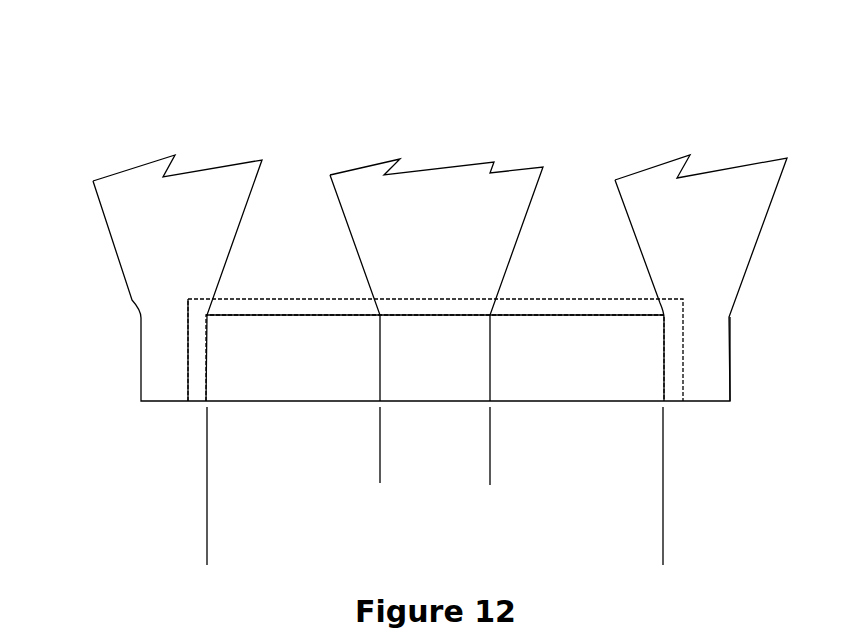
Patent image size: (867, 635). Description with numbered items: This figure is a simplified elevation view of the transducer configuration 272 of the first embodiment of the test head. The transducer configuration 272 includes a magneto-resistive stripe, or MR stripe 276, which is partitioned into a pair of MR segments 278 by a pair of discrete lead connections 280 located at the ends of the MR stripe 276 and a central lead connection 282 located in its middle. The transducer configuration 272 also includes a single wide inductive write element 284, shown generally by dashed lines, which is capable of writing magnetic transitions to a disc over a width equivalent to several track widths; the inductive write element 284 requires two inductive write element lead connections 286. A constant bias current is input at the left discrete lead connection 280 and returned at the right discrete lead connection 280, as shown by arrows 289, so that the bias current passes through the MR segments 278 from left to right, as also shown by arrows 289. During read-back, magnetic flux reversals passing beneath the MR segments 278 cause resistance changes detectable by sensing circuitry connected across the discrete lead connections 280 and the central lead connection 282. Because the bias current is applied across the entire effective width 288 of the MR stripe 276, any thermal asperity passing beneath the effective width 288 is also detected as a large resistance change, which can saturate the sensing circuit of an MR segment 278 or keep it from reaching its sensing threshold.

The transducer configuration 272 is at (118, 93).
The MR stripe 276 is at (748, 315).
The MR segments 278 is at (380, 462).
The discrete lead connections 280 is at (200, 246).
The central lead connection 282 is at (464, 248).
The inductive write element 284 is at (188, 352).
The inductive write element lead connections 286 is at (252, 297).
The effective width 288 is at (663, 542).
The arrows 289 is at (181, 112).